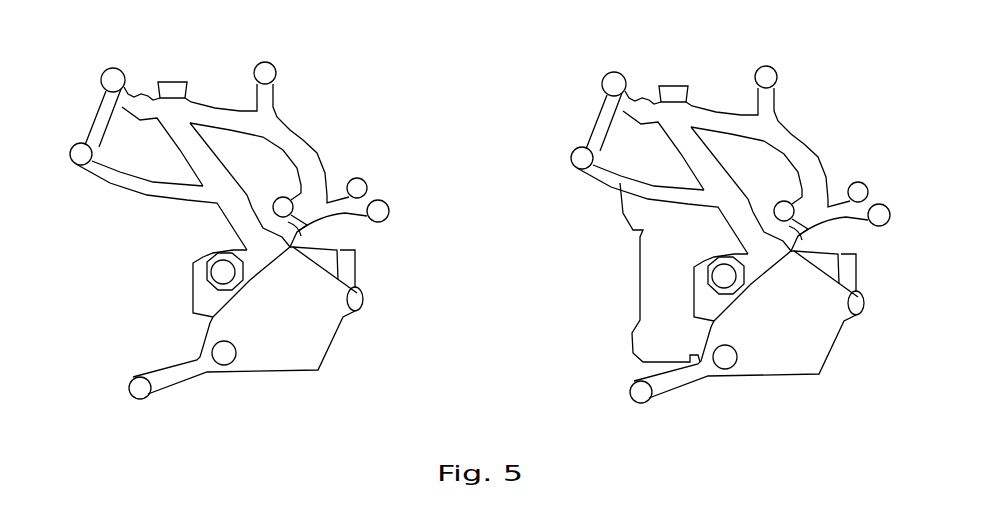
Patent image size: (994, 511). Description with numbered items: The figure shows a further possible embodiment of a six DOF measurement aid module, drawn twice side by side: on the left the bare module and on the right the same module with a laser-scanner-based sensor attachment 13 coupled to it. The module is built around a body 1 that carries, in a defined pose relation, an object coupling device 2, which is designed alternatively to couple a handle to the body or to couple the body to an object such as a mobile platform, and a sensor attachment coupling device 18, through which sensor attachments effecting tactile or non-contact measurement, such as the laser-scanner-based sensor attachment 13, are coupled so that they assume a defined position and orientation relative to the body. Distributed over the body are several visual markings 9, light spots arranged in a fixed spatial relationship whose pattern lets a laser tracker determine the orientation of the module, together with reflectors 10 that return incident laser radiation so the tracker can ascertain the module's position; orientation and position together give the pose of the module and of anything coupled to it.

The body 1 is at (300, 319).
The object coupling device 2 is at (280, 370).
The visual markings 9 is at (82, 150).
The reflector 10 is at (169, 86).
The laser-scanner-based sensor attachment 13 is at (697, 242).
The sensor attachment coupling device 18 is at (176, 251).